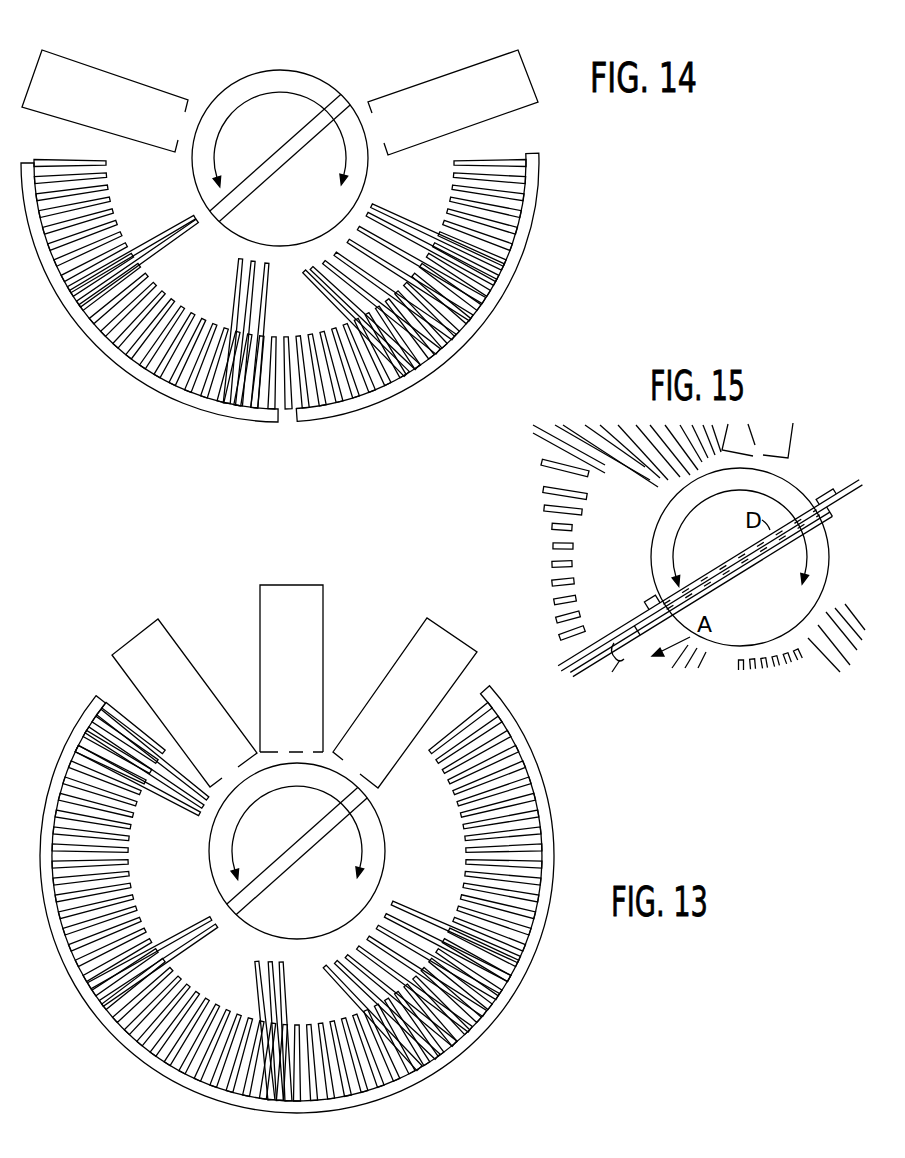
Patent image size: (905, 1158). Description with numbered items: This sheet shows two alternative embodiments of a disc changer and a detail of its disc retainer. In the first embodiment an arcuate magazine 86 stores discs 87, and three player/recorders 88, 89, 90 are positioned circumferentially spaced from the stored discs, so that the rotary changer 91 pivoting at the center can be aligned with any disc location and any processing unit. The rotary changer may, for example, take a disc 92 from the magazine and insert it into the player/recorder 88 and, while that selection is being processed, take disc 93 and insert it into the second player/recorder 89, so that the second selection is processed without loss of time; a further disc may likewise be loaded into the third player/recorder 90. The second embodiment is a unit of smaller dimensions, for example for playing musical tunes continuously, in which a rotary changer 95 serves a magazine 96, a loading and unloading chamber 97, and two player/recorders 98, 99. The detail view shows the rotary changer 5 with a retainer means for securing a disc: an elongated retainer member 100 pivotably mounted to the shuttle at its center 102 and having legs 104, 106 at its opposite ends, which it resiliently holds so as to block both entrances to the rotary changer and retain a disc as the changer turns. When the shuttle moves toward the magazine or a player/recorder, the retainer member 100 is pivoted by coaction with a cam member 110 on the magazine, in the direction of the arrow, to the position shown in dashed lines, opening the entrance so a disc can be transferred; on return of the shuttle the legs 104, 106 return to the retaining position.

In FIG. 15, the rotary changer 5 is at (660, 529).
In FIG. 13, the arcuate magazine 86 is at (522, 741).
In FIG. 13, the discs 87 is at (522, 990).
In FIG. 13, the player/recorder 88 is at (133, 646).
In FIG. 13, the second player/recorder 89 is at (320, 624).
In FIG. 13, the third player/recorder 90 is at (453, 652).
In FIG. 13, the rotary changer 91 is at (213, 851).
In FIG. 13, the disc 92 is at (98, 981).
In FIG. 13, the disc 93 is at (470, 1020).
In FIG. 14, the rotary changer 95 is at (195, 170).
In FIG. 14, the magazine 96 is at (531, 202).
In FIG. 14, the loading and unloading chamber 97 is at (288, 406).
In FIG. 14, the player/recorder 98 is at (94, 76).
In FIG. 14, the player/recorder 99 is at (470, 82).
In FIG. 15, the retainer member 100 is at (711, 583).
In FIG. 15, the center of the retainer member 102 is at (752, 563).
In FIG. 15, the leg 104 is at (649, 604).
In FIG. 15, the leg 106 is at (823, 503).
In FIG. 15, the cam member 110 is at (613, 649).